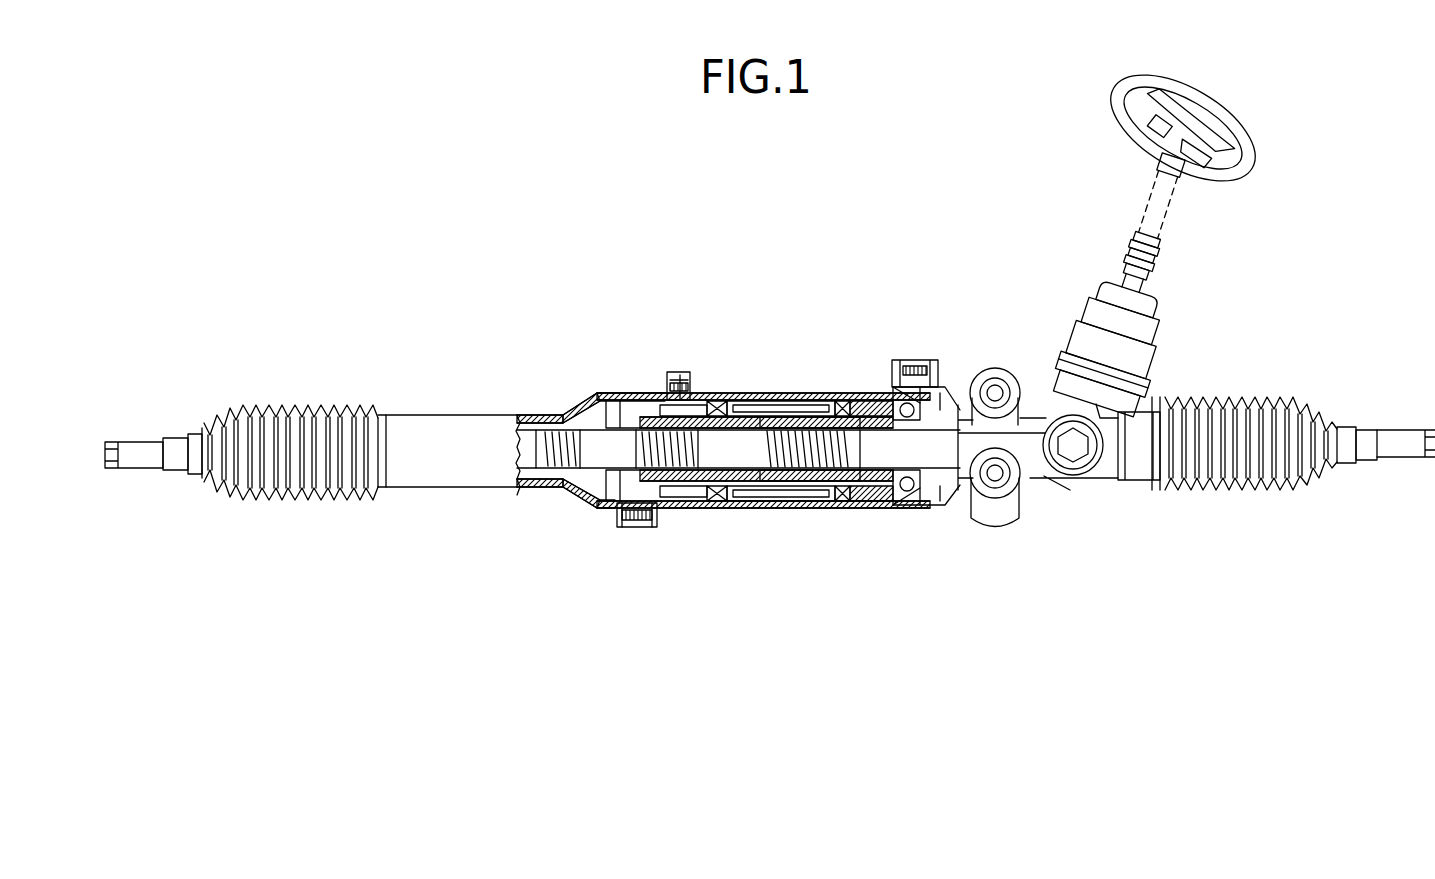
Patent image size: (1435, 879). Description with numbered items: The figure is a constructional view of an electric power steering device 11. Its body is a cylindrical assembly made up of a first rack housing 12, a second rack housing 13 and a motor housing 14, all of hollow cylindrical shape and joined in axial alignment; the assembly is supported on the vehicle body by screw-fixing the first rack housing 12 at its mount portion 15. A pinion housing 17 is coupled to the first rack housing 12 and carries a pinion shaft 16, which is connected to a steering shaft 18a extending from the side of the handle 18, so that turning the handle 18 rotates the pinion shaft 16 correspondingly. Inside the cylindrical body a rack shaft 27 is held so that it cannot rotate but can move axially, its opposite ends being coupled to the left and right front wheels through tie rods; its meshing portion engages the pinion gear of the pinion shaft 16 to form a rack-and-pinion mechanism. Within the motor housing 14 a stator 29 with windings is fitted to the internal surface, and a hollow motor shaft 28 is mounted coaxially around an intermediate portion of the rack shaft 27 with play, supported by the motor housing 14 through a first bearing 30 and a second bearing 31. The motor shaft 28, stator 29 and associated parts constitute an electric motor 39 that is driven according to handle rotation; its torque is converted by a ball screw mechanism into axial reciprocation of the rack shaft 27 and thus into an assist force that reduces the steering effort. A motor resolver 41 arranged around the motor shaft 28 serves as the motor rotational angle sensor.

The electric power steering device 11 is at (989, 544).
The first rack housing 12 is at (956, 411).
The second rack housing 13 is at (543, 415).
The motor housing 14 is at (740, 392).
The mount portion 15 is at (1018, 509).
The pinion shaft 16 is at (1155, 243).
The pinion housing 17 is at (1066, 323).
The handle 18 is at (1262, 150).
The steering shaft 18a is at (1143, 186).
The rack shaft 27 is at (600, 462).
The motor shaft 28 is at (788, 400).
The stator 29 is at (752, 494).
The first bearing 30 is at (668, 493).
The second bearing 31 is at (917, 488).
The electric motor 39 is at (824, 379).
The motor resolver 41 is at (889, 488).